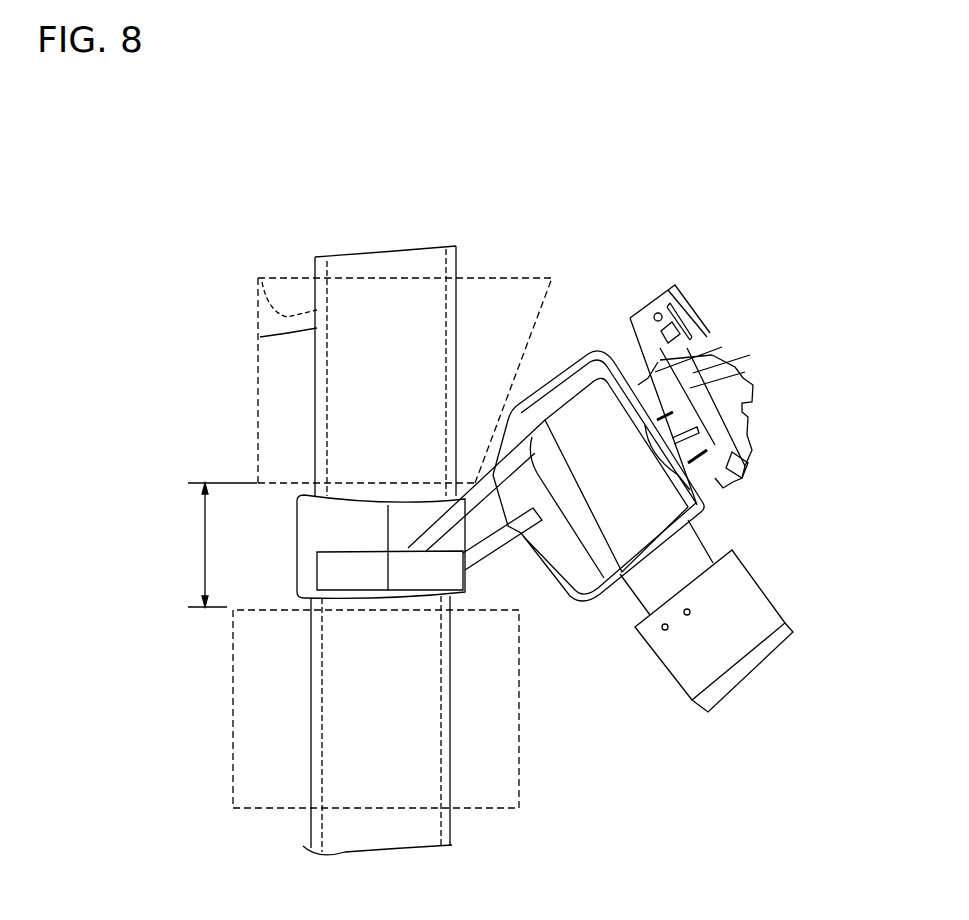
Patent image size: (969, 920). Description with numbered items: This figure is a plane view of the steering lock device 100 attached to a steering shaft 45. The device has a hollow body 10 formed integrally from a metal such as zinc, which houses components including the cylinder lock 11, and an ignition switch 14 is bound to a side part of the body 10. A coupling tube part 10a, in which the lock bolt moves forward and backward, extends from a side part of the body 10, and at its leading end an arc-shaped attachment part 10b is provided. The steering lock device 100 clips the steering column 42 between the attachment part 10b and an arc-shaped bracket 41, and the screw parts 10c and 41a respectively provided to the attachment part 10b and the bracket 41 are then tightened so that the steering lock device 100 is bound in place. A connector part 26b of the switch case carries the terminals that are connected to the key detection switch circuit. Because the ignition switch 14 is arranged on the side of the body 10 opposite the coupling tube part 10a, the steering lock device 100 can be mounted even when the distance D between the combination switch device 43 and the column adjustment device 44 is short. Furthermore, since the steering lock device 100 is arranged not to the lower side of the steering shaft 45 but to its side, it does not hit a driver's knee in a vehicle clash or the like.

The body 10 is at (610, 347).
The coupling tube part 10a is at (523, 580).
The attachment part 10b is at (410, 520).
The screw part 10c is at (437, 575).
The cylinder lock 11 is at (742, 683).
The ignition switch 14 is at (760, 378).
The connector part 26b is at (695, 310).
The bracket 41 is at (313, 538).
The screw part 41a is at (343, 573).
The steering column 42 is at (260, 337).
The combination switch device 43 is at (232, 782).
The column adjustment device 44 is at (258, 400).
The steering shaft 45 is at (280, 313).
The steering lock device 100 is at (725, 532).
The distance D is at (212, 545).